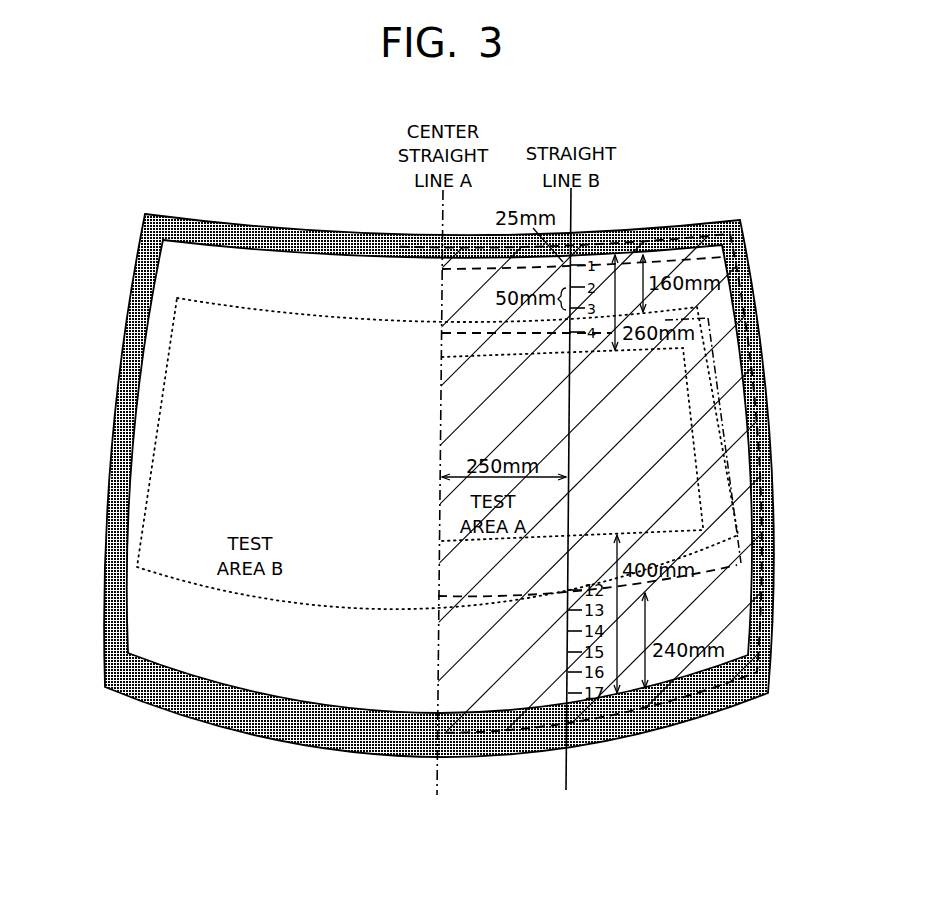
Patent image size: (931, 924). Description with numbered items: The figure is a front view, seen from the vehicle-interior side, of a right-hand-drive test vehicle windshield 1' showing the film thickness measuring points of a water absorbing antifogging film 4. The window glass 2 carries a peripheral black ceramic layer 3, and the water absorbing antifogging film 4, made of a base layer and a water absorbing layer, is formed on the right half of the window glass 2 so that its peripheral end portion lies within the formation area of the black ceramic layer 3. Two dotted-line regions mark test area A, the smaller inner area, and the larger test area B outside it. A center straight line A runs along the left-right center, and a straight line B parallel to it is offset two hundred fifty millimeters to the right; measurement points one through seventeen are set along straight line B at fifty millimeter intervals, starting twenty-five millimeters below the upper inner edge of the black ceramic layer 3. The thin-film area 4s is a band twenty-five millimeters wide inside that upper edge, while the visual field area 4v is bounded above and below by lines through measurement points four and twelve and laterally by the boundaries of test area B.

The vehicle windshield 1' is at (483, 462).
The window glass 2 is at (363, 757).
The black ceramic layer 3 is at (122, 450).
The water absorbing antifogging film 4 is at (490, 700).
The thin-film area 4s is at (670, 258).
The visual field area 4v is at (705, 392).